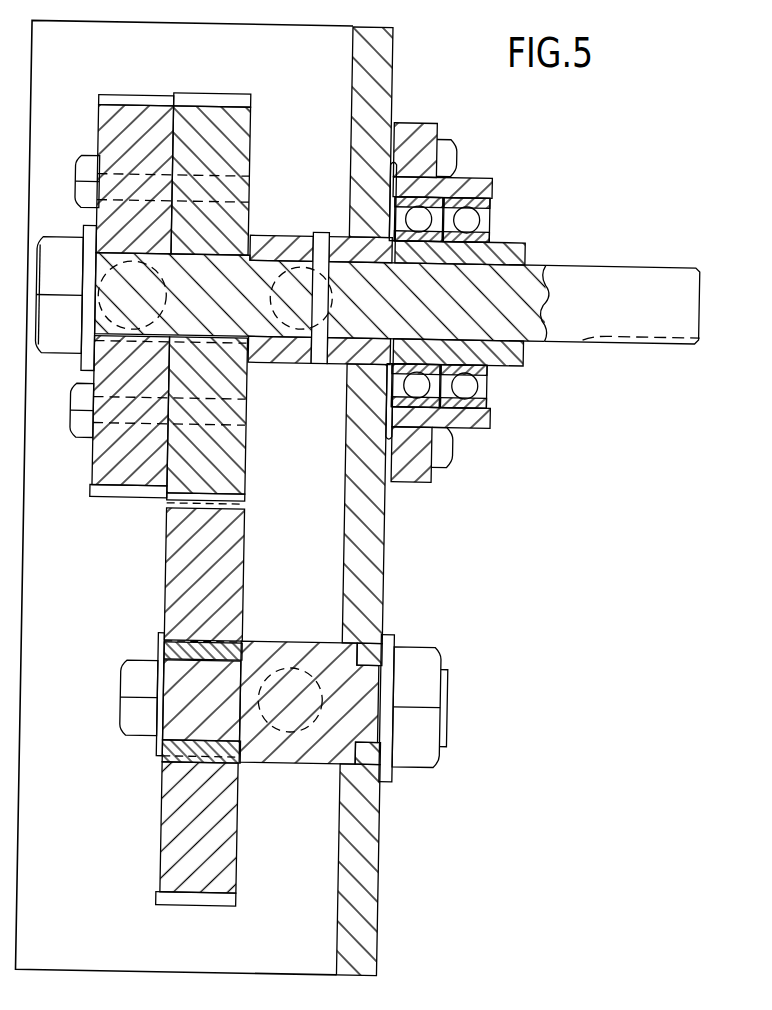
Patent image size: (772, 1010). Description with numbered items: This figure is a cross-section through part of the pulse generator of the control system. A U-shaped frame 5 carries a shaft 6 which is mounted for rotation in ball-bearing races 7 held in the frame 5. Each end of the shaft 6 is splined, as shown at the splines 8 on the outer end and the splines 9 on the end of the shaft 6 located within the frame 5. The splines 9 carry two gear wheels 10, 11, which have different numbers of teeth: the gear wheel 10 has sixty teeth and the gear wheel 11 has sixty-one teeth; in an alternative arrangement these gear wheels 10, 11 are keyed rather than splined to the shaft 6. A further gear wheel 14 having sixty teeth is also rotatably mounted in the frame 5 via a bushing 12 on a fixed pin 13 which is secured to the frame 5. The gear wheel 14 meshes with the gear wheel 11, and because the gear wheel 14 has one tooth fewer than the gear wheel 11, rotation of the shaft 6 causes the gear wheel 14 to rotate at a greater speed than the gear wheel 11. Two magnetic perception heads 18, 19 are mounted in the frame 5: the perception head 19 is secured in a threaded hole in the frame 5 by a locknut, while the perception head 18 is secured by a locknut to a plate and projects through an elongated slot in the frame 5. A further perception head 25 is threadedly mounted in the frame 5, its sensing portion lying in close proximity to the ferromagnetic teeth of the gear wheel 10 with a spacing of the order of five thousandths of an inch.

The U-shaped frame 5 is at (385, 68).
The shaft 6 is at (450, 311).
The ball-bearing races 7 is at (493, 206).
The splines 8 is at (640, 338).
The splines 9 is at (96, 249).
The gear wheel 10 is at (129, 478).
The gear wheel 11 is at (238, 472).
The bushing 12 is at (230, 766).
The fixed pin 13 is at (370, 653).
The gear wheel 14 is at (177, 580).
The magnetic perception head 18 is at (303, 668).
The magnetic perception head 19 is at (300, 246).
The further perception head 25 is at (97, 322).